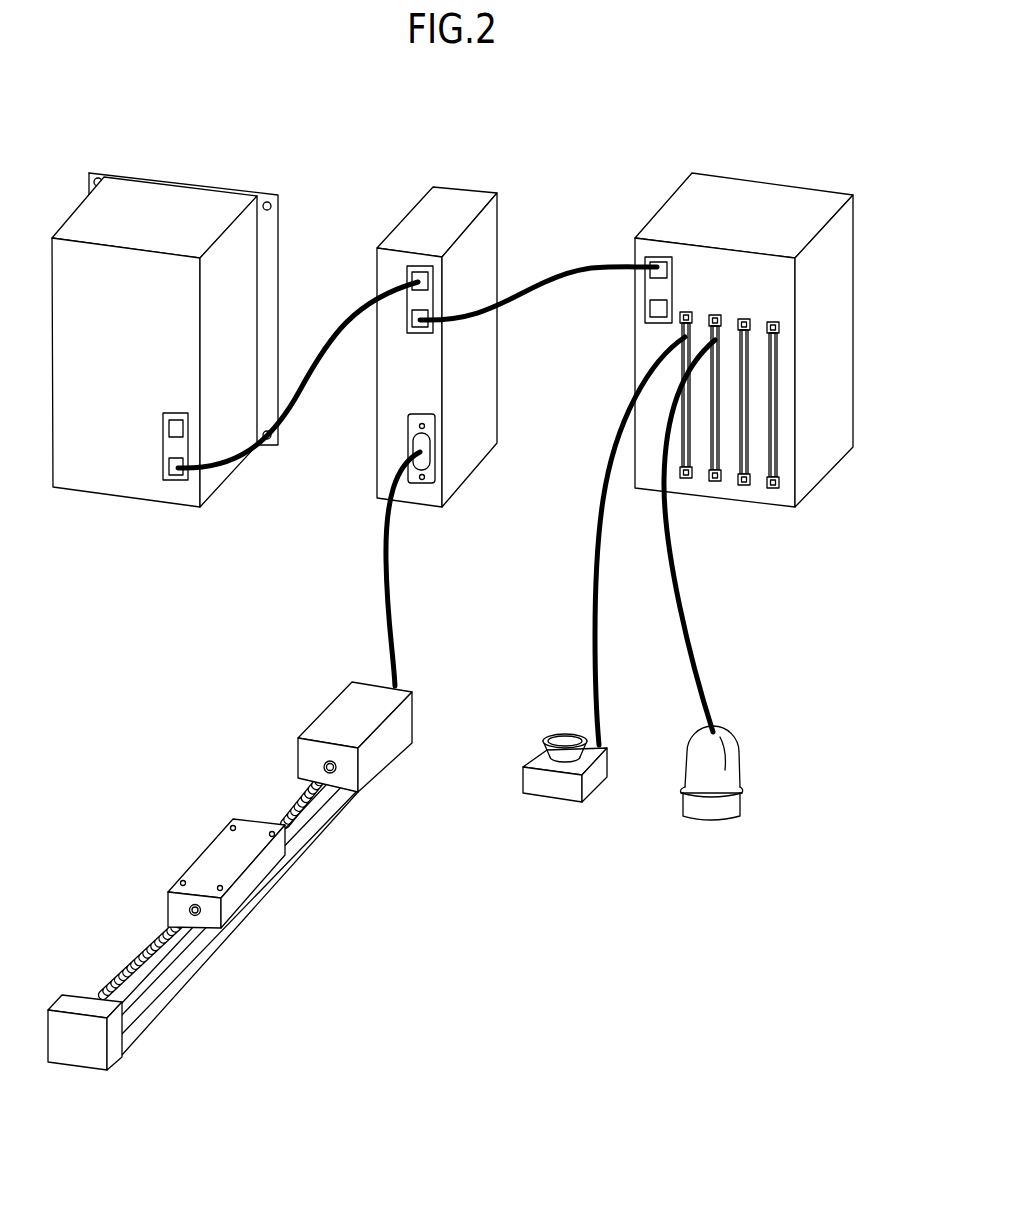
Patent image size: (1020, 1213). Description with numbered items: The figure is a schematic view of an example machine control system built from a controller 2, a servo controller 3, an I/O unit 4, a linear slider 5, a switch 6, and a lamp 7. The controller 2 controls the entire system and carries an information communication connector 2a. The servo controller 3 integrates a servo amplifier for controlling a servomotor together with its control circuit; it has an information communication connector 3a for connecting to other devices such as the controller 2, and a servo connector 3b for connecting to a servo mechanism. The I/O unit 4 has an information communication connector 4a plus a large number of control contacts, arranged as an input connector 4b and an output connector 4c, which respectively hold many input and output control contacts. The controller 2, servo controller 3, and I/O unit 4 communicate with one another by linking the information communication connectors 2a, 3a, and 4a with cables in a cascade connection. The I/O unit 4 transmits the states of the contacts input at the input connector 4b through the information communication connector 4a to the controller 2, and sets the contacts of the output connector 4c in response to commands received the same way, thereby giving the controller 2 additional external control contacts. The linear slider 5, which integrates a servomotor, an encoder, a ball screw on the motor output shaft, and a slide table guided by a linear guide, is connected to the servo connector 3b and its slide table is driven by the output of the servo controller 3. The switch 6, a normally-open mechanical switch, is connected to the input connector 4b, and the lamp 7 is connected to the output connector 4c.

The controller 2 is at (165, 181).
The information communication connector 2a is at (174, 480).
The servo controller 3 is at (465, 190).
The information communication connector 3a is at (428, 298).
The servo connector 3b is at (430, 463).
The I/O unit 4 is at (770, 184).
The information communication connector 4a is at (645, 292).
The input connector 4b is at (743, 486).
The output connector 4c is at (773, 323).
The linear slider 5 is at (267, 903).
The switch 6 is at (548, 797).
The lamp 7 is at (710, 827).